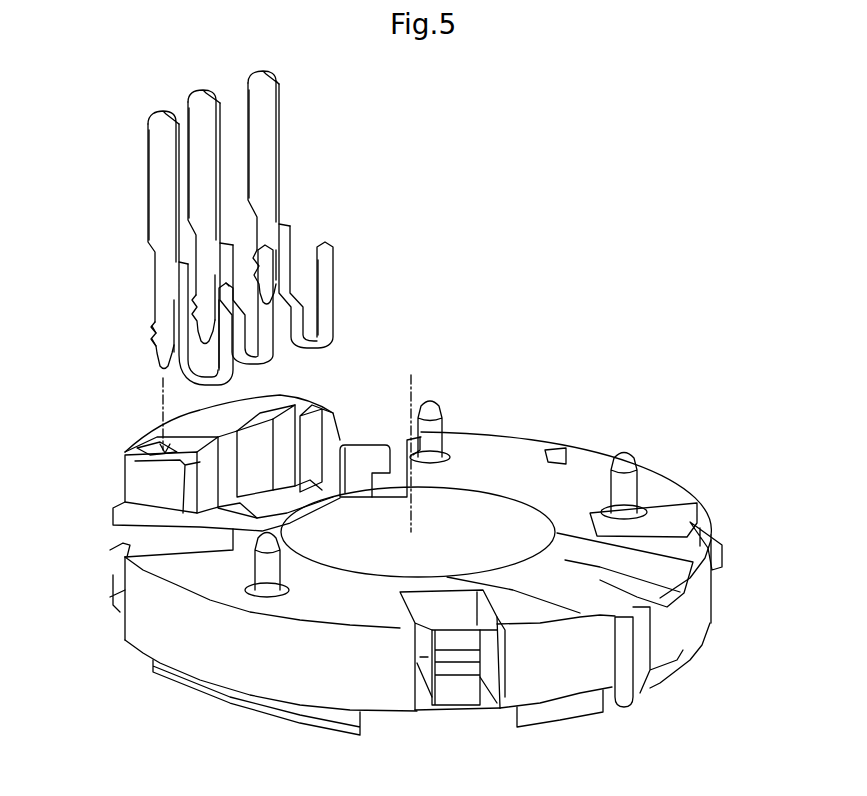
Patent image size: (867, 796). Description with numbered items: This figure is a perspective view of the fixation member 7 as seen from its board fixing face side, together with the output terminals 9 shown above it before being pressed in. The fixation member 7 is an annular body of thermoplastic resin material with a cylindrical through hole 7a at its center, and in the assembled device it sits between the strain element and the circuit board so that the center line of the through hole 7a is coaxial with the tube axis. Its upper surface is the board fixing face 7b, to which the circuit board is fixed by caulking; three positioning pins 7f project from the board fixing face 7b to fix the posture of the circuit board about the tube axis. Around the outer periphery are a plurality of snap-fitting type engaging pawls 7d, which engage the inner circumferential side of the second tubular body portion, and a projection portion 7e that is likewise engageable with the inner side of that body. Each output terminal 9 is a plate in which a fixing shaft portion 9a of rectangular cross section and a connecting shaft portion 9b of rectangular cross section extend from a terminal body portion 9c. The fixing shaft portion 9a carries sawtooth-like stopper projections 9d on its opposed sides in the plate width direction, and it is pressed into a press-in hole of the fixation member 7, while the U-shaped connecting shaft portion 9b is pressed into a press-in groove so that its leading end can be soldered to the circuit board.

The fixation member 7 is at (430, 554).
The through hole 7a is at (477, 503).
The board fixing face 7b is at (557, 477).
The engaging pawls 7d is at (377, 443).
The projection portion 7e is at (623, 680).
The positioning pins 7f is at (433, 407).
The output terminal 9 is at (146, 126).
The fixing shaft portion 9a is at (160, 293).
The connecting shaft portion 9b is at (330, 290).
The terminal body portion 9c is at (148, 167).
The stopper projections 9d is at (157, 348).